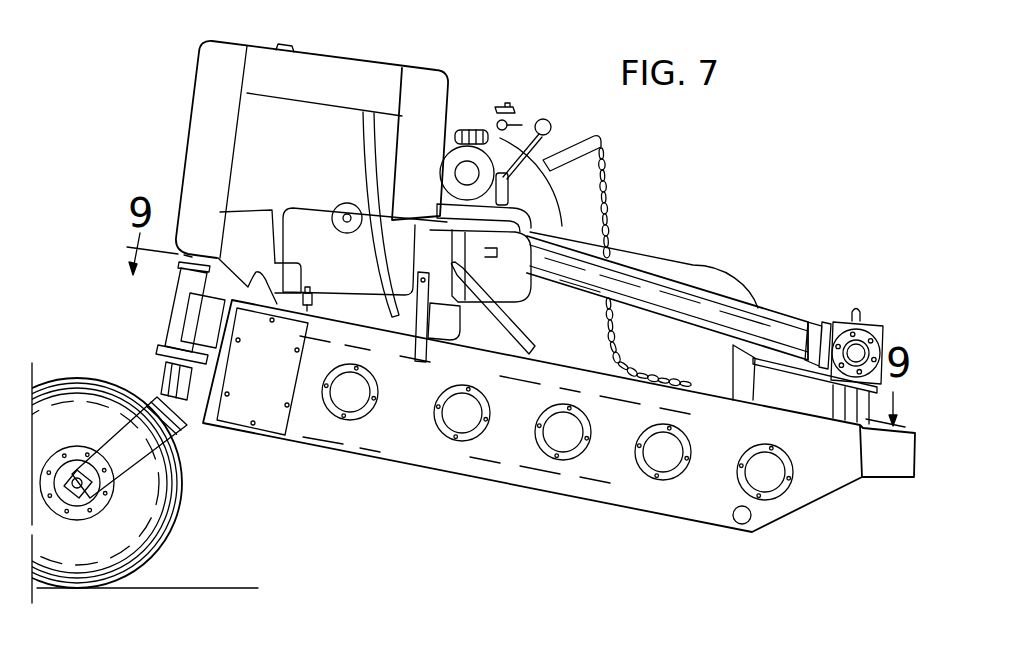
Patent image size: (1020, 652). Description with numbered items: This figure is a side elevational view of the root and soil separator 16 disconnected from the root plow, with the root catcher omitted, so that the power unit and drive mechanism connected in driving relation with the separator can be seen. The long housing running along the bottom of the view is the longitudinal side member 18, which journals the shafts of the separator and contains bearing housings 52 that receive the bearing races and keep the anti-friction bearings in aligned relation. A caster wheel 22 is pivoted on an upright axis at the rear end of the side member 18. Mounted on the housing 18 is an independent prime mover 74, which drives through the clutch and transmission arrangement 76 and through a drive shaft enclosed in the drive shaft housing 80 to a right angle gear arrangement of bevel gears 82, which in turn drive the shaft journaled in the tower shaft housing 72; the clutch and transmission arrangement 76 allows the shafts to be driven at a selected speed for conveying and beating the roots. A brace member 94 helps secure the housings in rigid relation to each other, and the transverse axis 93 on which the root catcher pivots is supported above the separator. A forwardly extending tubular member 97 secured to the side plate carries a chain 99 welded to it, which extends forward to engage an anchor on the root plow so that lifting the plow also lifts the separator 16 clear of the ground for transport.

The root and soil separator 16 is at (677, 256).
The longitudinal side member 18 is at (443, 470).
The caster wheel 22 is at (163, 495).
The bearing housing 52 is at (458, 408).
The tower shaft housing 72 is at (826, 349).
The prime mover 74 is at (183, 154).
The clutch and transmission arrangement 76 is at (500, 304).
The drive shaft housing 80 is at (760, 318).
The bevel gears 82 is at (862, 347).
The transverse axis 93 is at (498, 110).
The brace member 94 is at (518, 127).
The tubular member 97 is at (590, 137).
The chain 99 is at (612, 180).